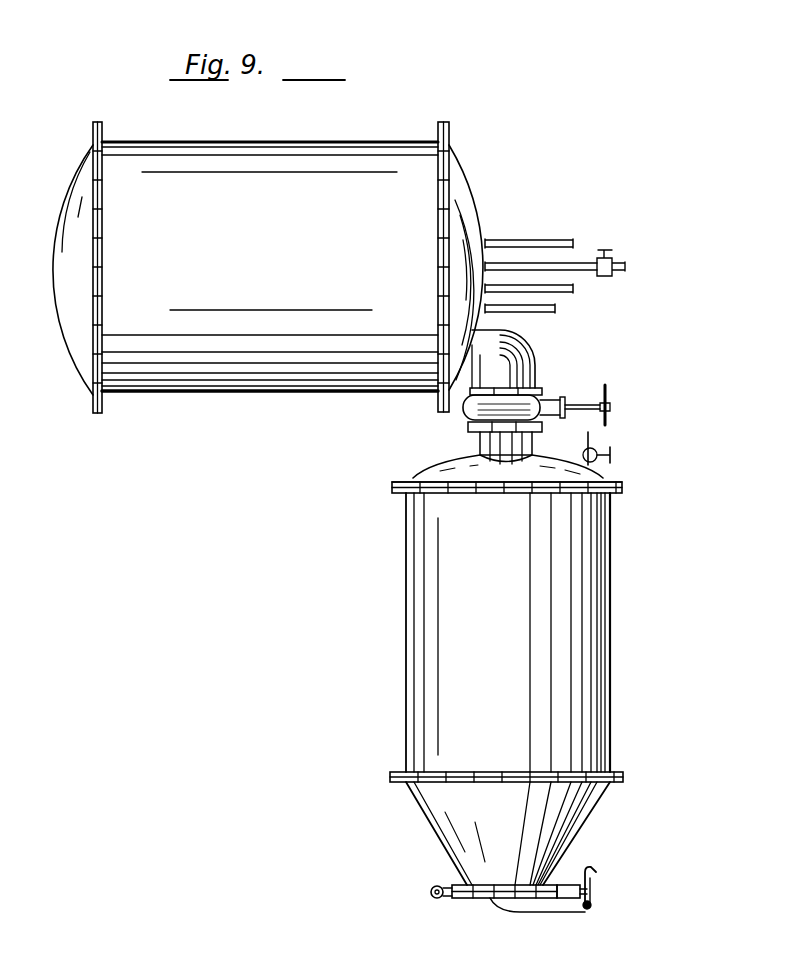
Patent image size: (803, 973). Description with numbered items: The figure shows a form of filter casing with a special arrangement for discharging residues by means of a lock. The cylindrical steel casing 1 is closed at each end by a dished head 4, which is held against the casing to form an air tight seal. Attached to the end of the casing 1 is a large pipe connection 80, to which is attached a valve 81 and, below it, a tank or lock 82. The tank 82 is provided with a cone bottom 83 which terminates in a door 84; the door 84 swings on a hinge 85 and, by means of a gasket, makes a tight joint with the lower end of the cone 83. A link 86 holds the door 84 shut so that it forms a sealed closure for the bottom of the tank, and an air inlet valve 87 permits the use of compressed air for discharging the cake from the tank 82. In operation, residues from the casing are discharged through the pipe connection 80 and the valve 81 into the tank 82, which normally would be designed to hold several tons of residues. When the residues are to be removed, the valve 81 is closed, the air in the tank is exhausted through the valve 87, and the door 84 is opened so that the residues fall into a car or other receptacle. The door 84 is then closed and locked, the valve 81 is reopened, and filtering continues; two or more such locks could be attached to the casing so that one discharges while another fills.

The cylindrical steel casing 1 is at (380, 150).
The dished head 4 is at (78, 192).
The pipe connection 80 is at (508, 368).
The valve 81 is at (608, 395).
The tank or lock 82 is at (578, 553).
The cone bottom 83 is at (570, 820).
The door 84 is at (535, 905).
The hinge 85 is at (430, 891).
The link 86 is at (598, 874).
The air inlet valve 87 is at (598, 452).